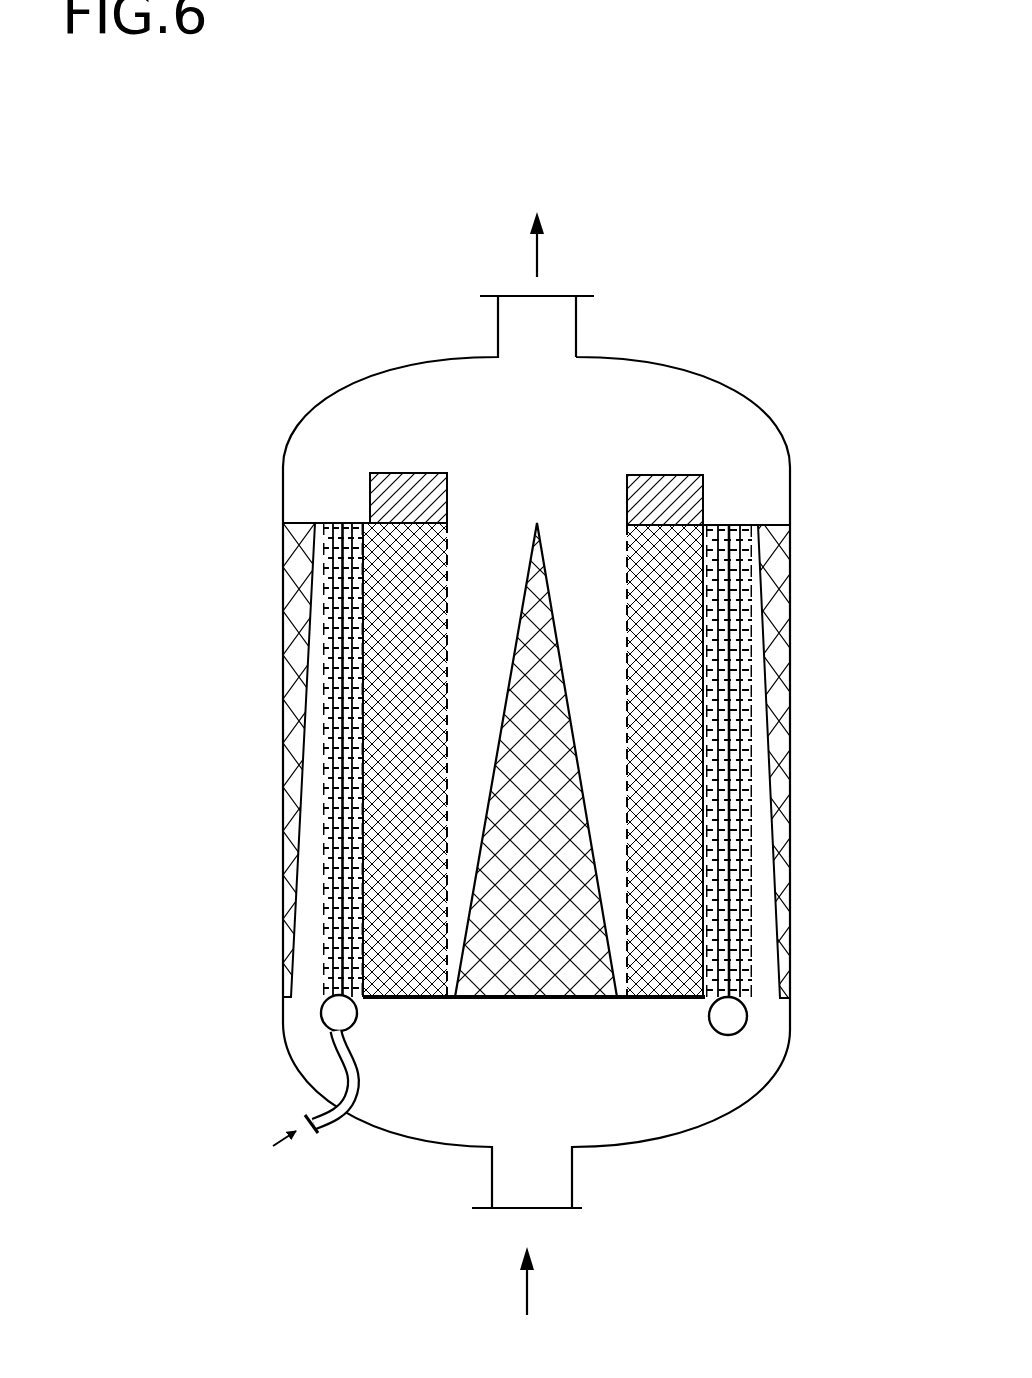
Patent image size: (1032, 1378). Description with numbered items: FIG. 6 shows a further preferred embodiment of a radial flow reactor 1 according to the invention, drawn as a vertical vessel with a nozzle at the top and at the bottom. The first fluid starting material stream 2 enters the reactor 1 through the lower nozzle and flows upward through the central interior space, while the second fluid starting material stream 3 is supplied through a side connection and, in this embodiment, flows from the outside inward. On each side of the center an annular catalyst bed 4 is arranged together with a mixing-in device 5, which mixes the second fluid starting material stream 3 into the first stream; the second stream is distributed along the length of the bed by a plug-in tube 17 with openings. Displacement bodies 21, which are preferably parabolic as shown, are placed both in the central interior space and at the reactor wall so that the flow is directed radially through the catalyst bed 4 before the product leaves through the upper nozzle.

The reactor 1 is at (822, 778).
The first fluid starting material stream 2 is at (527, 1292).
The second fluid starting material stream 3 is at (283, 1146).
The catalyst bed 4 is at (745, 932).
The mixing-in device 5 is at (747, 882).
The plug-in tube 17 is at (320, 1007).
The displacement bodies 21 is at (293, 710).